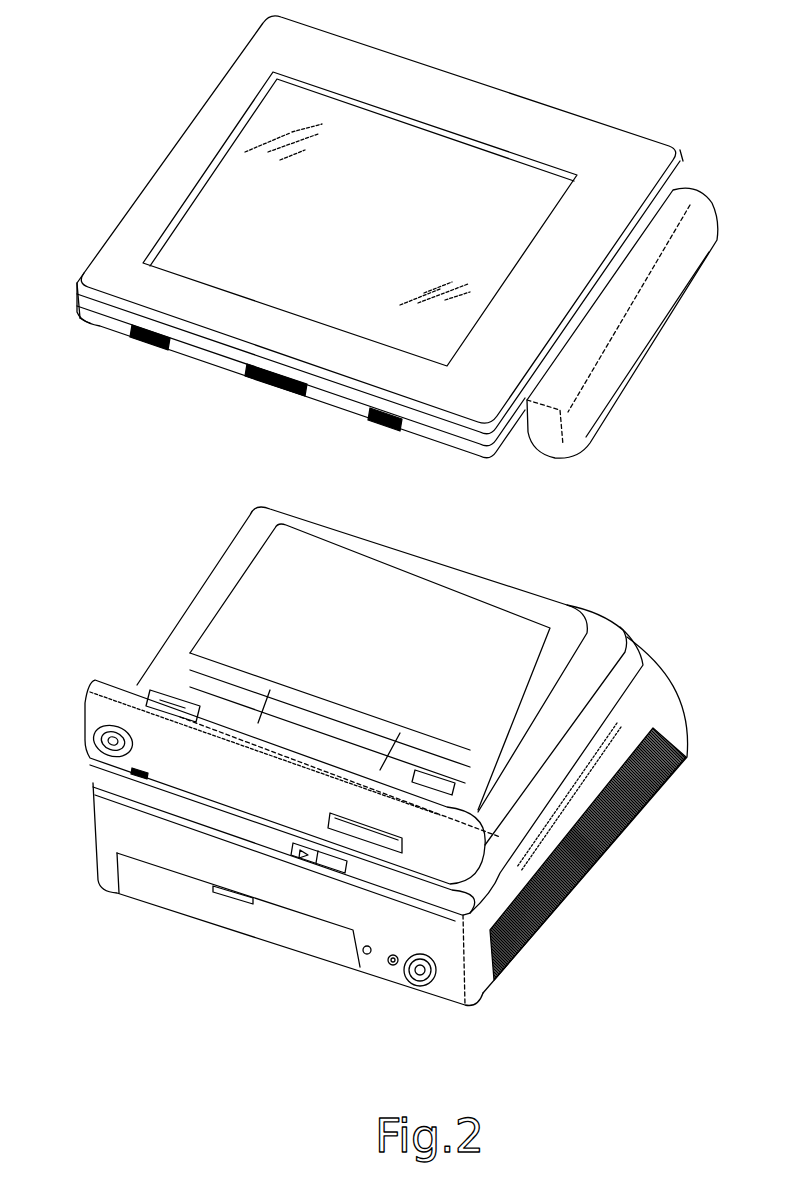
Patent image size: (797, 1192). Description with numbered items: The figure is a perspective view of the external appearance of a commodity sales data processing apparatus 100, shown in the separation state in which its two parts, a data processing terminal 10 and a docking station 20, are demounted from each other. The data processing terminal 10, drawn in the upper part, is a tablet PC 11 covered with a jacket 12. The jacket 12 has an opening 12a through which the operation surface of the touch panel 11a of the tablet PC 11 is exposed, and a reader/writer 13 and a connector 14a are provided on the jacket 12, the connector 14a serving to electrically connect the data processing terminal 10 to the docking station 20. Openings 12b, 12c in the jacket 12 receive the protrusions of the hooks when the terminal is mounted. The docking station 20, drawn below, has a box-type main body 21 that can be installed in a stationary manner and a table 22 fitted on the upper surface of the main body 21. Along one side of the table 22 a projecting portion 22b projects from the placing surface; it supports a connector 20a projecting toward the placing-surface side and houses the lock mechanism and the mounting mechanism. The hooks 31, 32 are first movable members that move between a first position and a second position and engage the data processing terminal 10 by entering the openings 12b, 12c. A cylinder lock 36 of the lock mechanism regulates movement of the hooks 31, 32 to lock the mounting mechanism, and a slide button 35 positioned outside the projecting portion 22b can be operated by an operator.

The data processing terminal 10 is at (231, 90).
The tablet PC 11 is at (220, 200).
The touch panel 11a is at (418, 153).
The jacket 12 is at (113, 240).
The opening 12a is at (172, 203).
The opening 12b is at (158, 344).
The opening 12c is at (382, 428).
The reader/writer 13 is at (640, 327).
The connector 14a is at (268, 388).
The commodity sales data processing apparatus 100 is at (642, 540).
The docking station 20 is at (115, 945).
The connector 20a is at (407, 557).
The main body 21 is at (112, 892).
The table 22 is at (92, 762).
The projecting portion 22b is at (98, 680).
The hook 31 is at (188, 667).
The hook 32 is at (444, 780).
The slide button 35 is at (367, 838).
The cylinder lock 36 is at (92, 742).